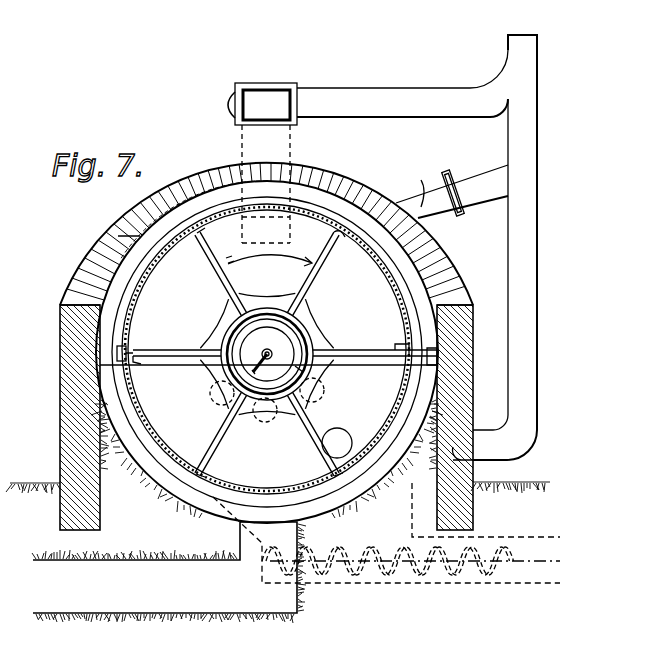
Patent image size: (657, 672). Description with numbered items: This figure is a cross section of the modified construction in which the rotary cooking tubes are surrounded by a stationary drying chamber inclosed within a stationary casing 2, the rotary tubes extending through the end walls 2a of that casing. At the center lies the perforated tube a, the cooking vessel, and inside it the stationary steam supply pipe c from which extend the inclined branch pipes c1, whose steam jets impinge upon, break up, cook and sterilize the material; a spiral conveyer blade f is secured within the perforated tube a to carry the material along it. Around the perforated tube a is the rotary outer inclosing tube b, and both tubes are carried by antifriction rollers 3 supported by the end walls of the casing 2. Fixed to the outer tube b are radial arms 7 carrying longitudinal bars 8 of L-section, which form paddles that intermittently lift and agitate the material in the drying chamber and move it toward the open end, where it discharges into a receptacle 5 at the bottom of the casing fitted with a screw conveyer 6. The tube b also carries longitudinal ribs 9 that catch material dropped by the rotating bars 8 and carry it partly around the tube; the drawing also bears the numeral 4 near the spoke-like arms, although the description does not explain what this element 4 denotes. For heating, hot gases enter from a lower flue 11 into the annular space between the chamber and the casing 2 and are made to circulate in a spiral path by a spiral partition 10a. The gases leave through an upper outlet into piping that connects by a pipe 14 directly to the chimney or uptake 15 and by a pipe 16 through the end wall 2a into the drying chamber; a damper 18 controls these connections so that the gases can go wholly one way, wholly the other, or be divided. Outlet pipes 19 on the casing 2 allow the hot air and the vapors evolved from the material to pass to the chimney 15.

The stationary casing 2 is at (178, 190).
The end wall of the casing 2a is at (458, 313).
The antifriction rollers 3 is at (258, 413).
The spokes / arms 4 is at (330, 441).
The receptacle 5 is at (386, 533).
The screw conveyer 6 is at (398, 566).
The radial arms 7 is at (396, 429).
The longitudinal bars 8 is at (143, 362).
The longitudinal ribs 9 is at (318, 332).
The spiral partition 10a is at (440, 366).
The lower flue 11 is at (165, 567).
The pipe 14 is at (386, 92).
The chimney or uptake 15 is at (525, 292).
The pipe 16 is at (268, 90).
The damper 18 is at (224, 104).
The outlet pipes 19 is at (512, 463).
The perforated tube a is at (263, 346).
The outer inclosing tube b is at (306, 322).
The steam supply pipe c is at (272, 360).
The branch pipes c1 is at (263, 375).
The spiral conveyer blade f is at (300, 368).